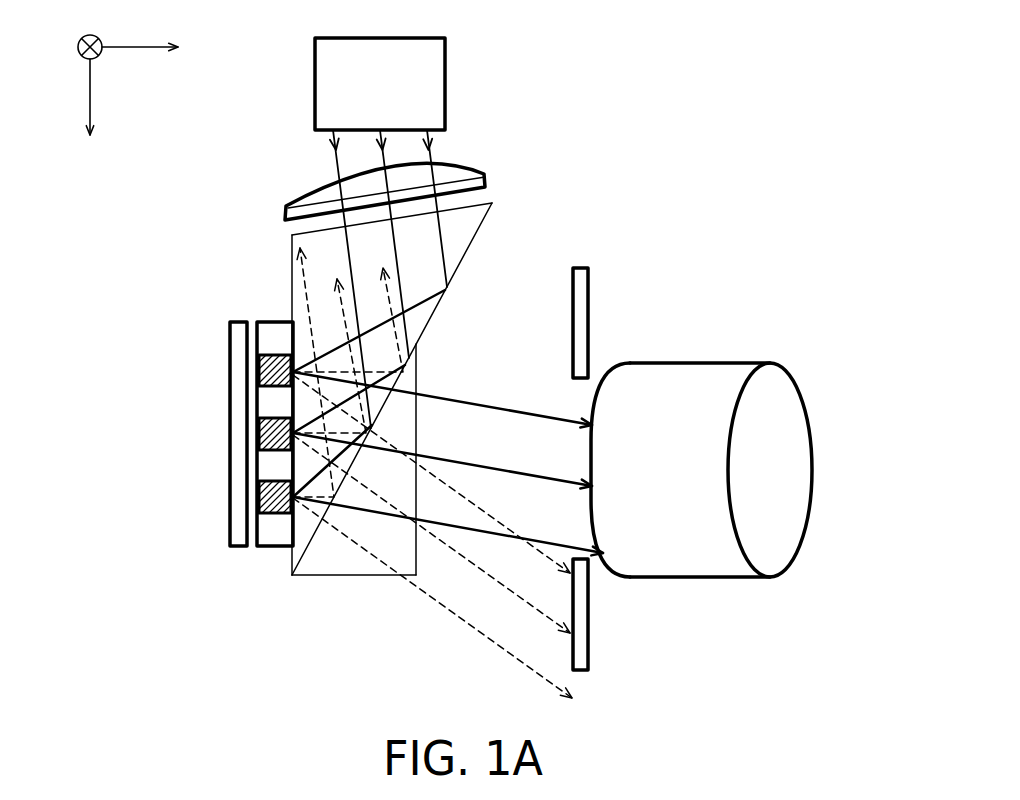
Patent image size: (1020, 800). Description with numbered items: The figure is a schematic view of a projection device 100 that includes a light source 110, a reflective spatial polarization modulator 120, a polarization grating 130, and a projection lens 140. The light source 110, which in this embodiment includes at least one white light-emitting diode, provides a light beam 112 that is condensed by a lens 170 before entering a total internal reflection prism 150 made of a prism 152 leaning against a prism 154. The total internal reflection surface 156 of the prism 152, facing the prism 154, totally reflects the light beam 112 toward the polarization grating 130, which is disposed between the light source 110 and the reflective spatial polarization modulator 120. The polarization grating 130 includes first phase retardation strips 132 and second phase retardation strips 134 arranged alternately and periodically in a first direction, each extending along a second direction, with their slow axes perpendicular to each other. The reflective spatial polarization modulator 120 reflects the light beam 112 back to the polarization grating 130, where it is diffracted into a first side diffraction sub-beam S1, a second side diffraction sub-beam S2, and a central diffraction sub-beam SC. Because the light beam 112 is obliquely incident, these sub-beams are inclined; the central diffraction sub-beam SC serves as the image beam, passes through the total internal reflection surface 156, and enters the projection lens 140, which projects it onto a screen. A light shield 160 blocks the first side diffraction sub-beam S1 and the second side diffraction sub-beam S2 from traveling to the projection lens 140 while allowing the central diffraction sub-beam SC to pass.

The projection device 100 is at (462, 350).
The light source 110 is at (313, 83).
The light beam 112 is at (430, 133).
The reflective spatial polarization modulator 120 is at (224, 492).
The polarization grating 130 is at (275, 548).
The first phase retardation strips 132 is at (268, 337).
The second phase retardation strips 134 is at (270, 375).
The projection lens 140 is at (700, 578).
The total internal reflection prism 150 is at (720, 170).
The prism 152 is at (290, 243).
The prism 154 is at (415, 376).
The total internal reflection surface 156 is at (310, 542).
The light shield 160 is at (589, 303).
The lens 170 is at (313, 192).
The first side diffraction sub-beam S1 is at (332, 503).
The second side diffraction sub-beam S2 is at (443, 608).
The central diffraction sub-beam SC is at (520, 410).